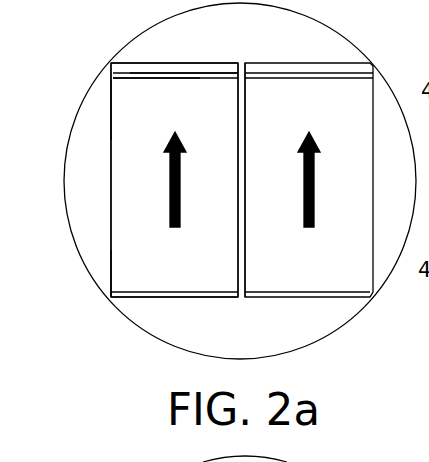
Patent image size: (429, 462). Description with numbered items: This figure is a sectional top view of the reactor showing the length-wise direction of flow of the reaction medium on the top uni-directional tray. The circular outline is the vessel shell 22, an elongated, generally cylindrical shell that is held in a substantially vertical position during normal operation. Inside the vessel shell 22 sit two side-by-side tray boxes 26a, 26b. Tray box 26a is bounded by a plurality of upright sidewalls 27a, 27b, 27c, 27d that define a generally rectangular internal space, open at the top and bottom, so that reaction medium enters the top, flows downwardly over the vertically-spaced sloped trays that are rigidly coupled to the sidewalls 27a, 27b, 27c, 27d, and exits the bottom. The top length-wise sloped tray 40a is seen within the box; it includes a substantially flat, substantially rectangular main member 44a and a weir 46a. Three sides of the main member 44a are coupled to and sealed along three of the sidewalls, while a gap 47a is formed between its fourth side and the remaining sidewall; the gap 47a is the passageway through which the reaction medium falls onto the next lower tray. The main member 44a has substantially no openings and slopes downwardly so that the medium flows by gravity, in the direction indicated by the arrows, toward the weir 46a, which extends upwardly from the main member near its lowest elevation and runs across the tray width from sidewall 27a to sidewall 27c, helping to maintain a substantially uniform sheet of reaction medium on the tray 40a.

The vessel shell 22 is at (200, 357).
The tray box 26a is at (158, 300).
The tray box 26b is at (325, 298).
The sidewall 27a is at (111, 232).
The sidewall 27b is at (136, 299).
The sidewall 27c is at (243, 133).
The sidewall 27d is at (168, 65).
The length-wise sloped tray 40a is at (128, 108).
The main member 44a is at (125, 258).
The weir 46a is at (125, 72).
The gap 47a is at (148, 72).